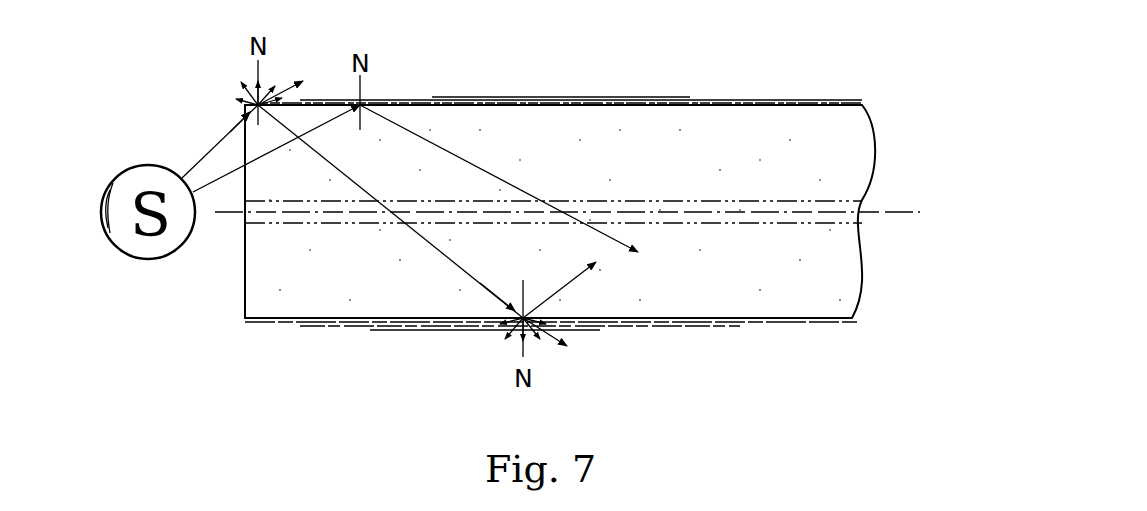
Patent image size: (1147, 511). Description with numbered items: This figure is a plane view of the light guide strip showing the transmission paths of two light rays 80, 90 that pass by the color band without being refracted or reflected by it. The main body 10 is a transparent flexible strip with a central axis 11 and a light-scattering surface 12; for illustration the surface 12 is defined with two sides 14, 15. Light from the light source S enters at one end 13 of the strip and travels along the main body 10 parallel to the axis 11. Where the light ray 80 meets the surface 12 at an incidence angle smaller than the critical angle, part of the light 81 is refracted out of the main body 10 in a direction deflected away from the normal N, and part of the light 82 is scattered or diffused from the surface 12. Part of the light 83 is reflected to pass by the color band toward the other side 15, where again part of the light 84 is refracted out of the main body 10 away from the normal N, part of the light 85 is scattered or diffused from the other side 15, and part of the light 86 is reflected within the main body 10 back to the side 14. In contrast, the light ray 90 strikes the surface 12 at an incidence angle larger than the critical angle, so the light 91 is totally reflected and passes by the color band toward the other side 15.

The main body 10 is at (758, 330).
The central axis 11 is at (900, 212).
The light-scattering surface 12 is at (733, 103).
The end 13 is at (245, 283).
The side 14 is at (667, 105).
The other side 15 is at (688, 322).
The light ray 80 is at (205, 140).
The refracted light 81 is at (282, 90).
The scattered light 82 is at (240, 84).
The reflected light 83 is at (410, 235).
The refracted light 84 is at (548, 332).
The scattered light 85 is at (506, 336).
The reflected light 86 is at (558, 297).
The light ray 90 is at (223, 180).
The totally reflected light 91 is at (447, 150).